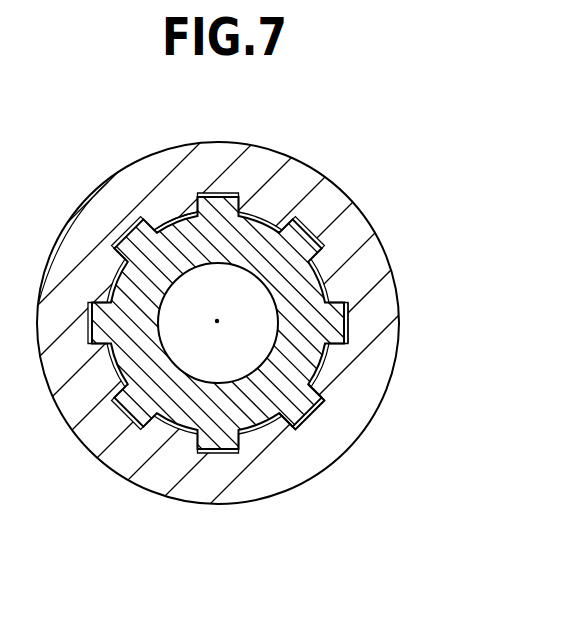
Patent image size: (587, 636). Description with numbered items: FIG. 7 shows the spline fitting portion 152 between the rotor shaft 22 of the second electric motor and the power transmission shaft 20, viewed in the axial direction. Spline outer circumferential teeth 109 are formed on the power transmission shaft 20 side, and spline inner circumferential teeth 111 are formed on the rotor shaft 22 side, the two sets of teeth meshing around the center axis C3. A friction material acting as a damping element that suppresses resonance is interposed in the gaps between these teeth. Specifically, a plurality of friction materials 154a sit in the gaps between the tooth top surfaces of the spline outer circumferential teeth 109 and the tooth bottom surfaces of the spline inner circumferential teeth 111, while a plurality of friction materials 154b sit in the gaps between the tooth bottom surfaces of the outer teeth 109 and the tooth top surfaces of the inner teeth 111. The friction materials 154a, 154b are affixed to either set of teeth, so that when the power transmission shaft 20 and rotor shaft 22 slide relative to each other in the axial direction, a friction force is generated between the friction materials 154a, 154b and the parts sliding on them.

The rotor shaft 22 is at (384, 214).
The spline fitting portion 152 is at (166, 201).
The friction material 154a is at (346, 322).
The friction material 154b is at (323, 288).
The spline inner circumferential teeth 111 is at (323, 370).
The spline outer circumferential teeth 109 is at (300, 405).
The power transmission shaft 20 is at (262, 336).
The center axis C3 is at (217, 320).